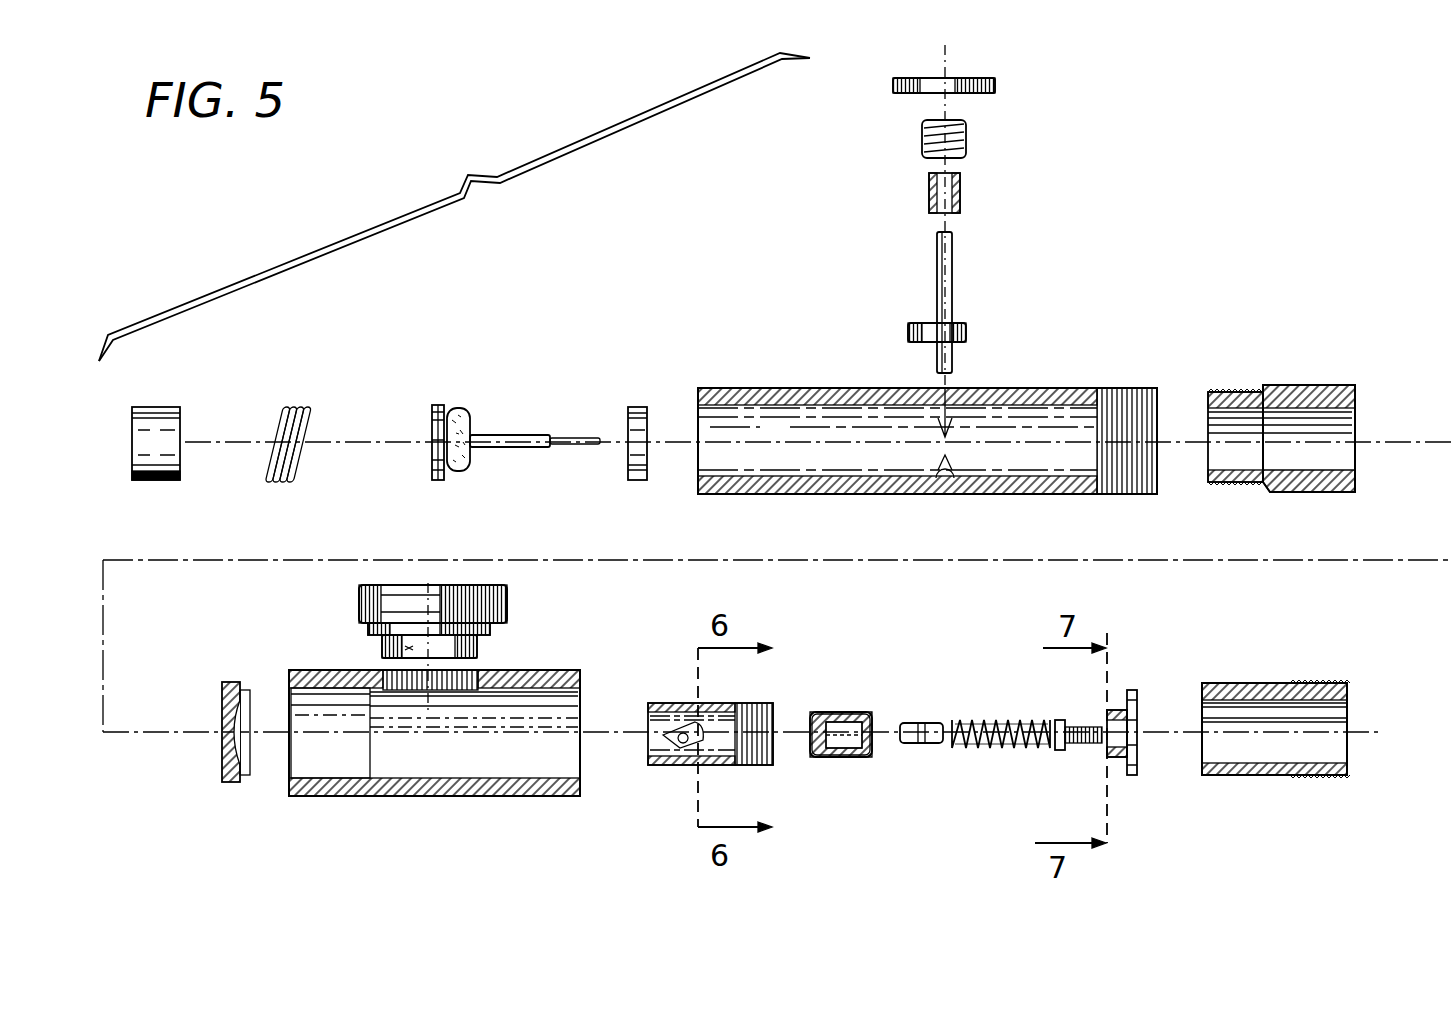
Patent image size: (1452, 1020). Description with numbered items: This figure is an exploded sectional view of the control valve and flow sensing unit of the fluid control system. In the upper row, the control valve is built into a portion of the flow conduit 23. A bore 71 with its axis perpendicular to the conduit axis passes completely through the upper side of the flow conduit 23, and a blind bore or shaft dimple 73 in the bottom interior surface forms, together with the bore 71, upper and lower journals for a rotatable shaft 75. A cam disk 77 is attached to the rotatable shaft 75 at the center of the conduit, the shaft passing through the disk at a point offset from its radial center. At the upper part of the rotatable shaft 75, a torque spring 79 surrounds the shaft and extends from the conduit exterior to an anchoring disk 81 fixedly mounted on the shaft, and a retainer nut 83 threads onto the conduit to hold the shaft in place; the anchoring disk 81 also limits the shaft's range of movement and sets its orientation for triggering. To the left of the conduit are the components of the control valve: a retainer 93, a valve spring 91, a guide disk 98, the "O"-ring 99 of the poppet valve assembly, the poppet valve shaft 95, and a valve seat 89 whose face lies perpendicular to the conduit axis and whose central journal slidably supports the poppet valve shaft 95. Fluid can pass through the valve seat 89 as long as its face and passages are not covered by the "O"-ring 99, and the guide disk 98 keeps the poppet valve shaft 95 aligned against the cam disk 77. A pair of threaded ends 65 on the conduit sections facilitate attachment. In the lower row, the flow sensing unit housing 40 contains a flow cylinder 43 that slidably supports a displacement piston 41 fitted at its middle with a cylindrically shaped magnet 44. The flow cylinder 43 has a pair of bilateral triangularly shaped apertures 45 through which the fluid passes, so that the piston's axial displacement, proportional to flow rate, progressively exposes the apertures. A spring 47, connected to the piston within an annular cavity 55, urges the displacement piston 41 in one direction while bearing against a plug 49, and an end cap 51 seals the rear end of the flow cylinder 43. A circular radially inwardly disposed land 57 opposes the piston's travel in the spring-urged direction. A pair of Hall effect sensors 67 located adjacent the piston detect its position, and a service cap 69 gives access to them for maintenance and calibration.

The flow conduit 23 is at (770, 494).
The flow sensing unit housing 40 is at (445, 796).
The displacement piston 41 is at (840, 757).
The flow cylinder 43 is at (725, 703).
The magnet 44 is at (922, 743).
The triangularly shaped apertures 45 is at (680, 765).
The spring 47 is at (1015, 720).
The plug 49 is at (1062, 750).
The end cap 51 is at (1137, 710).
The annular cavity 55 is at (838, 712).
The land 57 is at (233, 782).
The threaded ends 65 is at (1222, 392).
The Hall effect sensors 67 is at (382, 645).
The service cap 69 is at (507, 605).
The bore 71 is at (955, 390).
The shaft dimple 73 is at (948, 478).
The rotatable shaft 75 is at (937, 270).
The cam disk 77 is at (966, 333).
The torque spring 79 is at (922, 138).
The anchoring disk 81 is at (995, 85).
The retainer nut 83 is at (960, 193).
The valve seat 89 is at (637, 480).
The valve spring 91 is at (300, 407).
The retainer 93 is at (155, 407).
The poppet valve shaft 95 is at (510, 435).
The guide disk 98 is at (438, 480).
The "O"-ring 99 is at (462, 408).